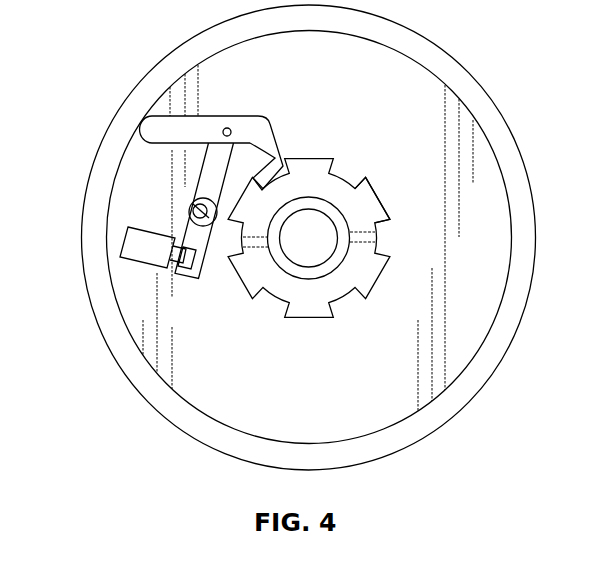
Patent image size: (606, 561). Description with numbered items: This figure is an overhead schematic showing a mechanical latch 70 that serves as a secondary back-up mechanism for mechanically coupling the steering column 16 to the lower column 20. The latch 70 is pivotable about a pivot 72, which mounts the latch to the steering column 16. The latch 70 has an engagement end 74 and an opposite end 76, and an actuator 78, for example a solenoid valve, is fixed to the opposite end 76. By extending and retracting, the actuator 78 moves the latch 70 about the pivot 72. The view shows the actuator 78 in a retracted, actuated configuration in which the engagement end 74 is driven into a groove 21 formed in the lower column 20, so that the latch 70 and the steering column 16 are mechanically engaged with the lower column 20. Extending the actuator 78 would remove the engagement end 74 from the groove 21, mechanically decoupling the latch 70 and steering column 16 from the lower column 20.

The steering column 16 is at (83, 261).
The lower column 20 is at (300, 168).
The groove 21 is at (350, 182).
The mechanical latch 70 is at (160, 117).
The pivot 72 is at (190, 205).
The engagement end 74 is at (282, 159).
The opposite end 76 is at (178, 276).
The actuator 78 is at (128, 243).